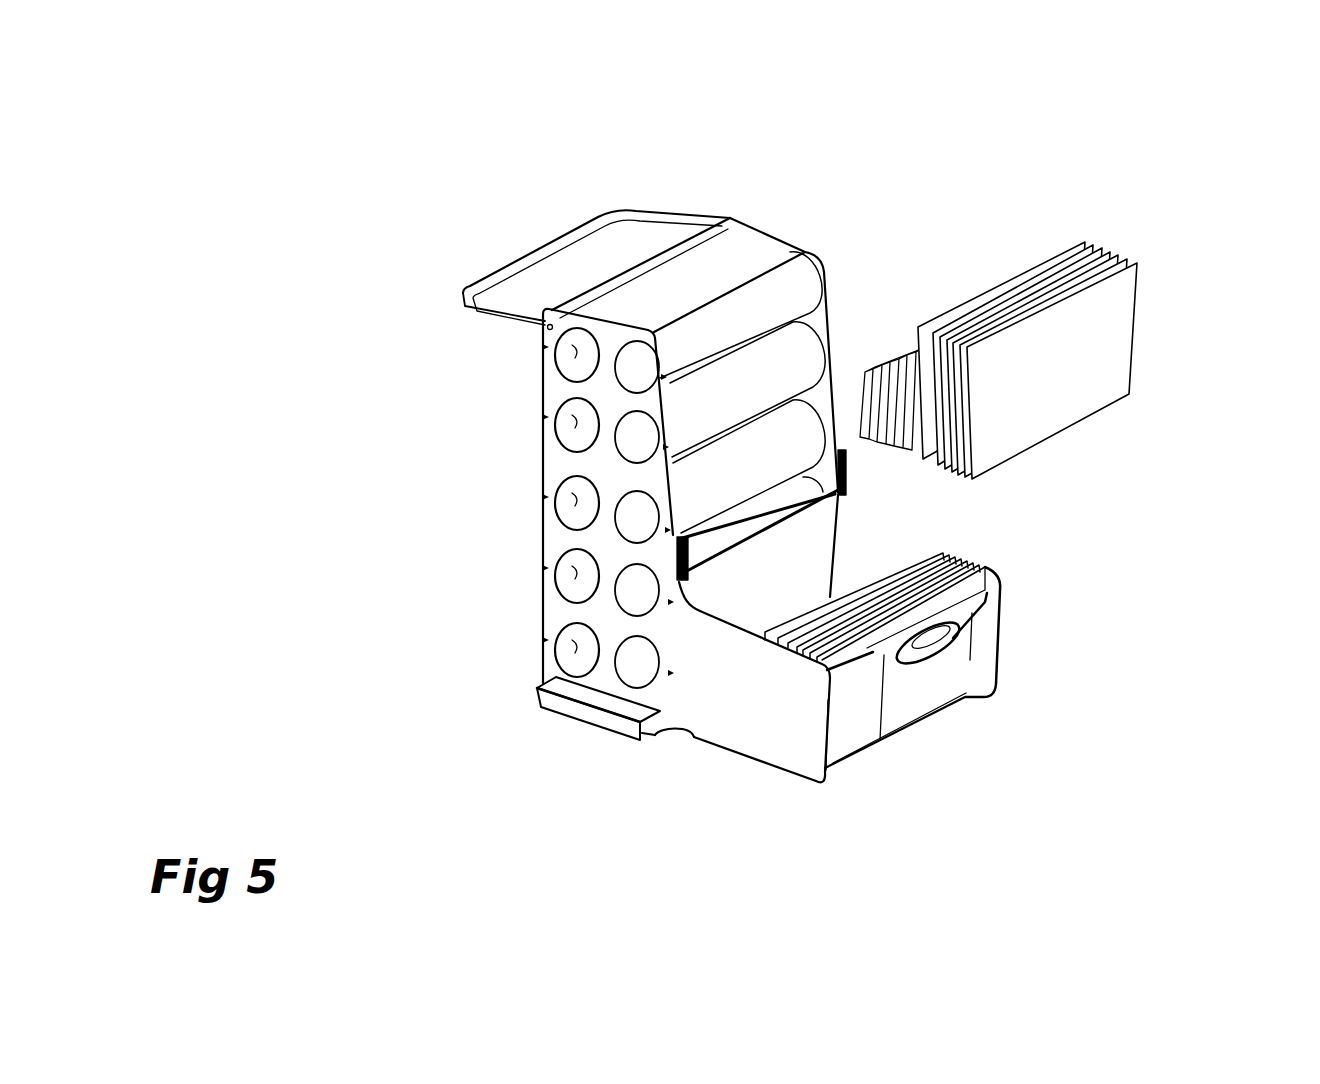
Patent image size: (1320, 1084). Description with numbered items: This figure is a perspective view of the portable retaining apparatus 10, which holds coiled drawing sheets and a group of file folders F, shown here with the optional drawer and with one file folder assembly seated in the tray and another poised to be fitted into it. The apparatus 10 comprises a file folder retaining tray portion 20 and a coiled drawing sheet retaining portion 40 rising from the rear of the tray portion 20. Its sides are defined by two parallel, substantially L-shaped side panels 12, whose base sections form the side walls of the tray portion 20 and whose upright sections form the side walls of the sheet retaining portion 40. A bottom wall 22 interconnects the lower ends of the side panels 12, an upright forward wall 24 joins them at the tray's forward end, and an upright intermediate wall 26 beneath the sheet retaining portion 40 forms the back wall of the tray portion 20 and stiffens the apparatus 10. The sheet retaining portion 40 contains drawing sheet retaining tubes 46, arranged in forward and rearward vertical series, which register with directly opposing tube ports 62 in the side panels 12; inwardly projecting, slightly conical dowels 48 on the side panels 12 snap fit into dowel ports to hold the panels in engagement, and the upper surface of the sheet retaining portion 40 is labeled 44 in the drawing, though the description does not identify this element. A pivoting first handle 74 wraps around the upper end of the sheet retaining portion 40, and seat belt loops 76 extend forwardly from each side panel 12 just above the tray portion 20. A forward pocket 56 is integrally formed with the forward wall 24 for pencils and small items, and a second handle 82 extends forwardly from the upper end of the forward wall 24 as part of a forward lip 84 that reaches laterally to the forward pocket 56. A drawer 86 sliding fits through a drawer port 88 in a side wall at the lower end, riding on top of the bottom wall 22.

The portable retaining apparatus 10 is at (1214, 165).
The side panels 12 is at (829, 334).
The file folder retaining tray portion 20 is at (1118, 552).
The bottom wall 22 is at (730, 733).
The forward wall 24 is at (967, 660).
The intermediate wall 26 is at (763, 568).
The coiled drawing sheet retaining portion 40 is at (892, 245).
The top cover 44 is at (752, 258).
The drawing sheet retaining tubes 46 is at (577, 297).
The dowels 48 is at (543, 347).
The forward pocket 56 is at (843, 717).
The tube ports 62 is at (567, 362).
The first handle 74 is at (527, 257).
The seat belt loops 76 is at (846, 492).
The second handle 82 is at (952, 648).
The forward lip 84 is at (1000, 597).
The drawer 86 is at (590, 720).
The drawer port 88 is at (680, 743).
The file folders F is at (1075, 388).